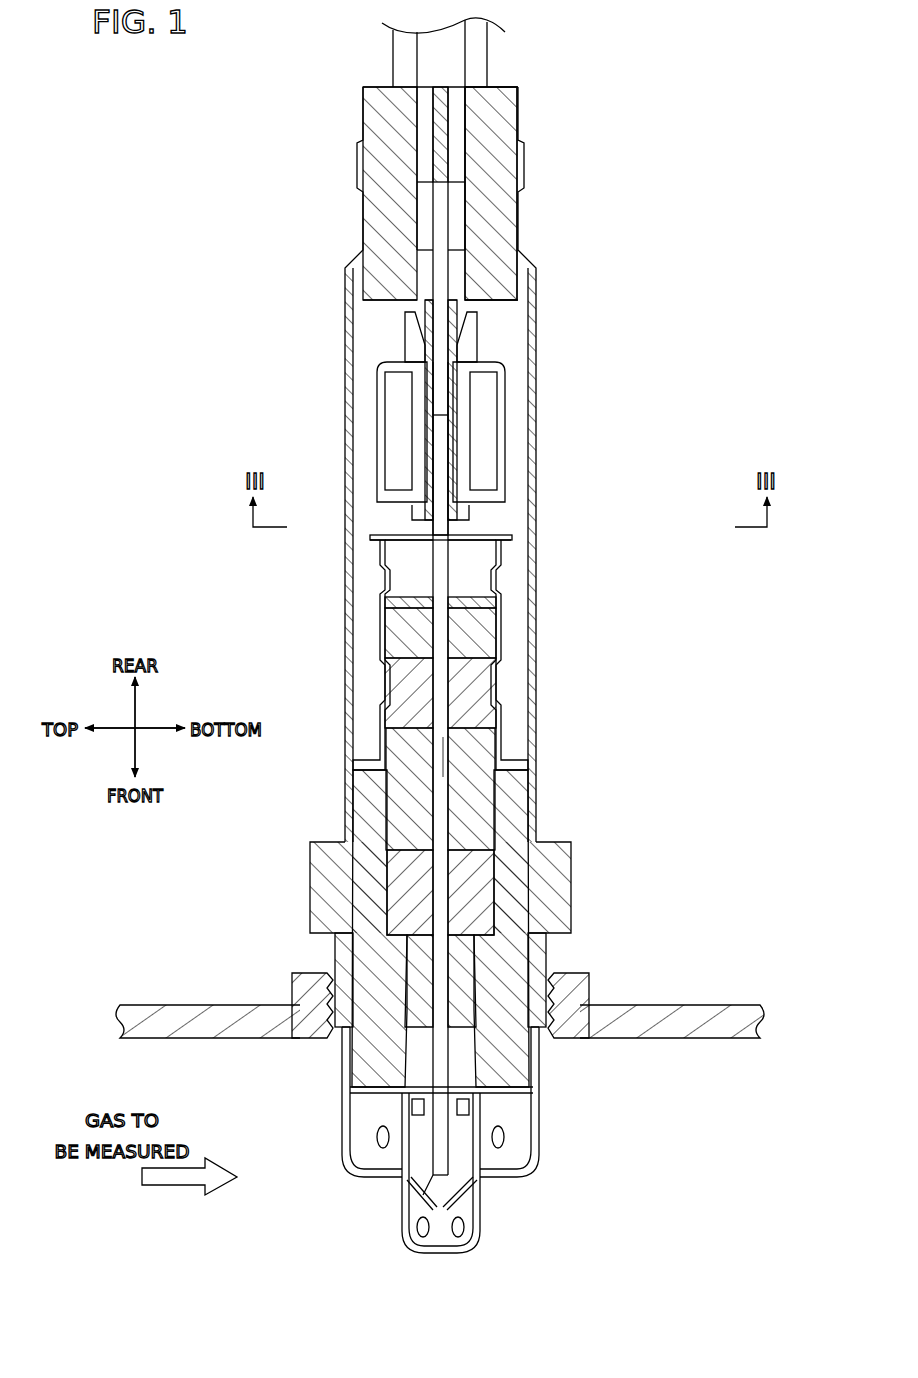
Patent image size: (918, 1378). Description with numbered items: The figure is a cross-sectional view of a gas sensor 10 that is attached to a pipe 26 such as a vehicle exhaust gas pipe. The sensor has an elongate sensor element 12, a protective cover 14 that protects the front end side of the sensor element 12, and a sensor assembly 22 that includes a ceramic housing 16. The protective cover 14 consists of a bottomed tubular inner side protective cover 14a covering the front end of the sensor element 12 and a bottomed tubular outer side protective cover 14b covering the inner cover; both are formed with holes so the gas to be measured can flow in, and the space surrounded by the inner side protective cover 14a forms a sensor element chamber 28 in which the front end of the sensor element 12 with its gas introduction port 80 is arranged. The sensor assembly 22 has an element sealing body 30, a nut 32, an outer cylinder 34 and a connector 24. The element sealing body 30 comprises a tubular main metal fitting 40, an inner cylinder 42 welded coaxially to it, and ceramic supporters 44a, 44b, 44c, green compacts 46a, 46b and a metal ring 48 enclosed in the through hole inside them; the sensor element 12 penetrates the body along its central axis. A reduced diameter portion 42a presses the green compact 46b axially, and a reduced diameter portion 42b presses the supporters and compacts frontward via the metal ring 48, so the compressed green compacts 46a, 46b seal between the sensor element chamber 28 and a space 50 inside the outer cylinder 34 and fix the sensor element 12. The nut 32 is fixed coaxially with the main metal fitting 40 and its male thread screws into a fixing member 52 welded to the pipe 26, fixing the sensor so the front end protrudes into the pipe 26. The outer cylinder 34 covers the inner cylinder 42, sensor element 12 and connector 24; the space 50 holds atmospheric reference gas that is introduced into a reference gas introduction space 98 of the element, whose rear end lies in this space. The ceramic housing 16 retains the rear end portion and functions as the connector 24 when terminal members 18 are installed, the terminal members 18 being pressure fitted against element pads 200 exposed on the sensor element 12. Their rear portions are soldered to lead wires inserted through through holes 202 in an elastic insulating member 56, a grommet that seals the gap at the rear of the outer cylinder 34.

The gas sensor 10 is at (636, 179).
The sensor element 12 is at (440, 808).
The protective cover 14 is at (496, 1140).
The inner side protective cover 14a is at (479, 1118).
The outer side protective cover 14b is at (541, 1140).
The ceramic housing 16 is at (507, 467).
The terminal members 18 is at (436, 384).
The sensor assembly 22 is at (690, 440).
The connector 24 is at (374, 406).
The pipe 26 is at (178, 1020).
The sensor element chamber 28 is at (466, 1167).
The element sealing body 30 is at (640, 545).
The nut 32 is at (532, 935).
The outer cylinder 34 is at (538, 526).
The main metal fitting 40 is at (506, 877).
The inner cylinder 42 is at (504, 562).
The reduced diameter portion 42a is at (386, 688).
The reduced diameter portion 42b is at (383, 581).
The ceramic supporter 44a is at (471, 946).
The ceramic supporter 44b is at (491, 779).
The ceramic supporter 44c is at (480, 633).
The green compact 46a is at (471, 861).
The green compact 46b is at (480, 679).
The metal ring 48 is at (493, 602).
The space 50 is at (514, 330).
The fixing member 52 is at (313, 990).
The elastic insulating member 56 is at (495, 229).
The gas introduction port 80 is at (432, 1180).
The reference gas introduction space 98 is at (440, 410).
The element pads 200 is at (456, 432).
The through holes 202 is at (462, 205).